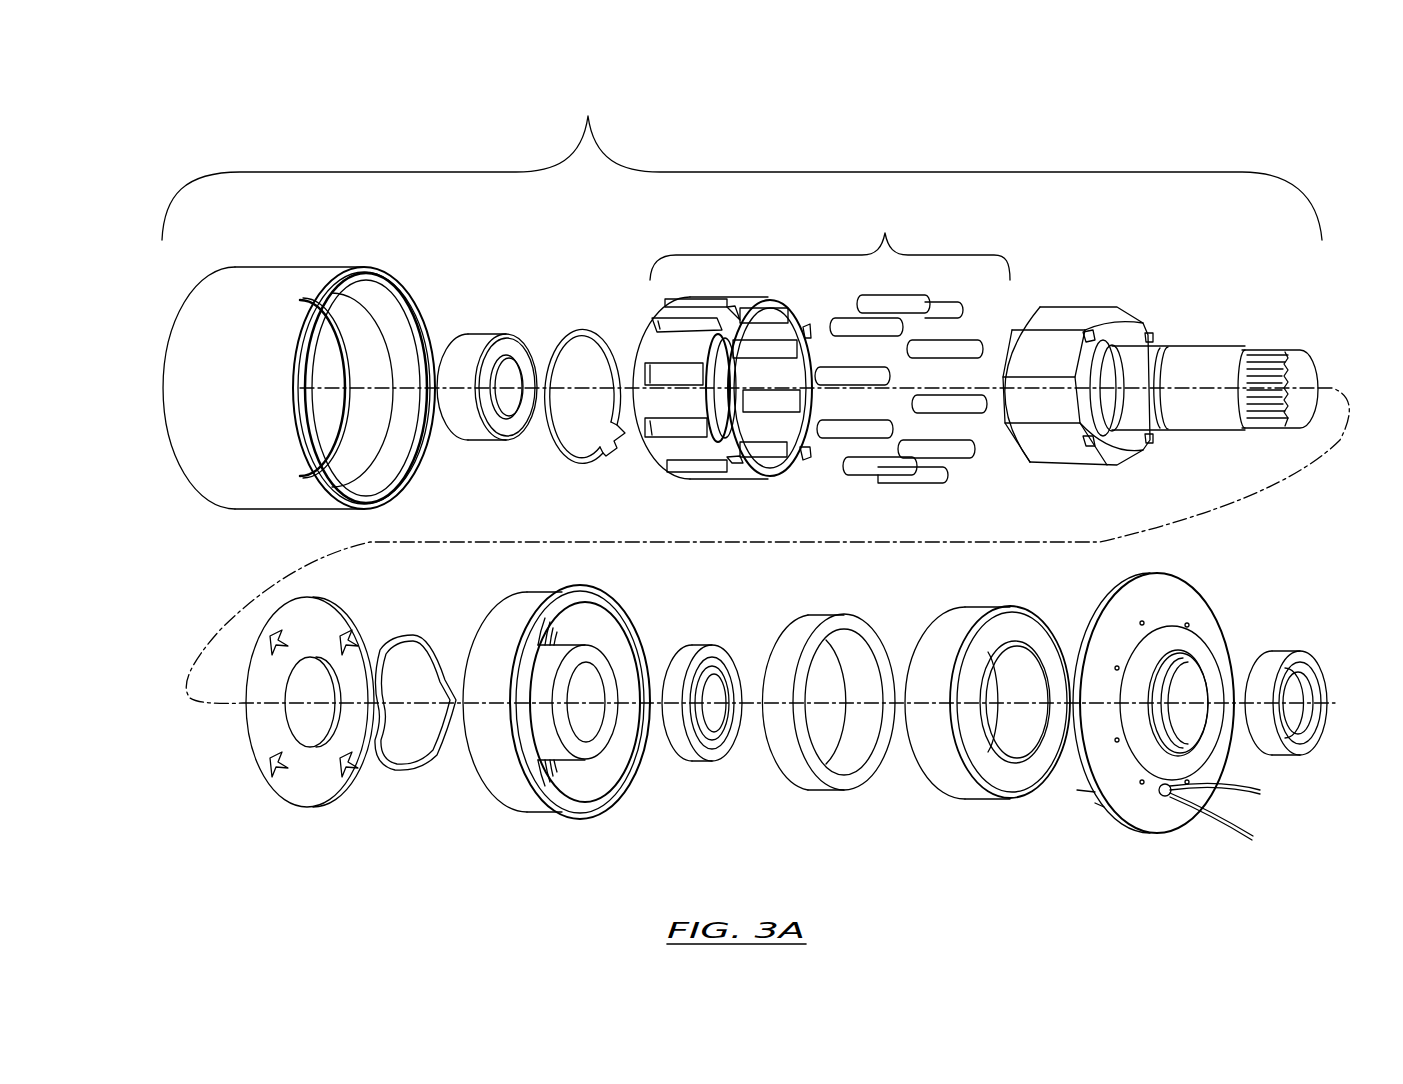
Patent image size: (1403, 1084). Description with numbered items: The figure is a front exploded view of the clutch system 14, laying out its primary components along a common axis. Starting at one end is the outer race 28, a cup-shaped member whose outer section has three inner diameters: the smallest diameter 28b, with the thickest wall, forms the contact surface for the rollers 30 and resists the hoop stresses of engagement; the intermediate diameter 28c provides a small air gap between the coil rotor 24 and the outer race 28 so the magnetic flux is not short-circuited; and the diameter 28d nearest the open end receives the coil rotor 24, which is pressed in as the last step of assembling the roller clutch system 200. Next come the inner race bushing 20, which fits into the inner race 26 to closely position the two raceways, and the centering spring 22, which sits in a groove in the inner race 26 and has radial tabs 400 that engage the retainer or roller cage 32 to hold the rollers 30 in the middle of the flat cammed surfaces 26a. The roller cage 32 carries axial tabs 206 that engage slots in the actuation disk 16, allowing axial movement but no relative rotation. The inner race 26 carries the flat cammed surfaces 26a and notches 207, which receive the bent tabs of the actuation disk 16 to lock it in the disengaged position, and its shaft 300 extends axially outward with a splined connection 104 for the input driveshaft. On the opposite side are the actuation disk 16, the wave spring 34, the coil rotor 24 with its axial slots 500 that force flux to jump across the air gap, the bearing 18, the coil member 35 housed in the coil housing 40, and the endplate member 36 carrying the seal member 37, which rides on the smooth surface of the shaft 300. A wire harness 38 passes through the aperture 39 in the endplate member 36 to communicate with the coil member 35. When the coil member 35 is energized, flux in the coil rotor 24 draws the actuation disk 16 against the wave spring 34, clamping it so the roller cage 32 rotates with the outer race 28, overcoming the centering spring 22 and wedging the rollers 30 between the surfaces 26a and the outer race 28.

The clutch system 14 is at (742, 160).
The actuation disk 16 is at (293, 820).
The bearing 18 is at (710, 770).
The inner race bushing 20 is at (493, 461).
The centering spring 22 is at (583, 310).
The coil rotor 24 is at (556, 721).
The inner race 26 is at (1097, 377).
The flat cammed surfaces 26a is at (1060, 357).
The outer race 28 is at (278, 527).
The smallest inner diameter 28b is at (332, 303).
The intermediate inner diameter 28c is at (358, 308).
The inner diameter closest to the open end 28d is at (403, 327).
The rollers 30 is at (960, 330).
The retainer or roller cage 32 is at (751, 391).
The wave spring 34 is at (422, 787).
The coil member 35 is at (832, 803).
The endplate member 36 is at (1223, 607).
The seal member 37 is at (1300, 768).
The wire member or harness 38 is at (1237, 833).
The aperture 39 is at (1167, 797).
The coil housing 40 is at (995, 817).
The splined connection 104 is at (1263, 350).
The roller clutch system 200 is at (830, 239).
The axial tabs 206 is at (733, 320).
The notches 207 is at (1088, 337).
The shaft 300 is at (1193, 413).
The radial tabs 400 is at (608, 456).
The axial slots 500 is at (560, 632).